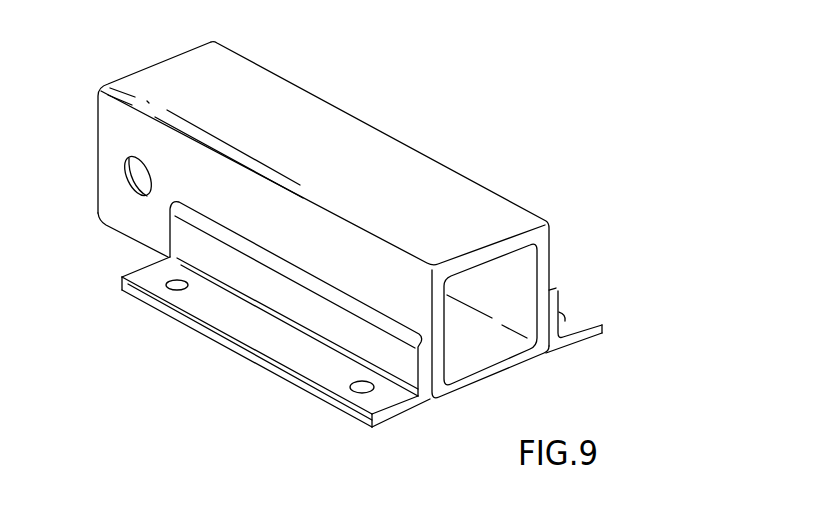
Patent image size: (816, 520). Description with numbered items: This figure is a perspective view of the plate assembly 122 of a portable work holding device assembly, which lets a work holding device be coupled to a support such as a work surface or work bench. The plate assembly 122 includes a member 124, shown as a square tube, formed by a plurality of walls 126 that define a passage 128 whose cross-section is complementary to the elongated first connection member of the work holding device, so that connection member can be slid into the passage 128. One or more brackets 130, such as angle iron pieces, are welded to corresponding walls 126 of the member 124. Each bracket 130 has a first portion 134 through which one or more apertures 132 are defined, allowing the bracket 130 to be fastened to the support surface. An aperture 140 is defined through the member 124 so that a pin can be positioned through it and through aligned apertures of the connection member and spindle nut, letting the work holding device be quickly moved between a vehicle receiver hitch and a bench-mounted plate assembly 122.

The plate assembly 122 is at (165, 426).
The member 124 is at (363, 122).
The walls 126 is at (388, 283).
The passage 128 is at (458, 362).
The bracket 130 is at (246, 330).
The apertures 132 is at (168, 292).
The first portion 134 is at (308, 365).
The aperture 140 is at (130, 180).